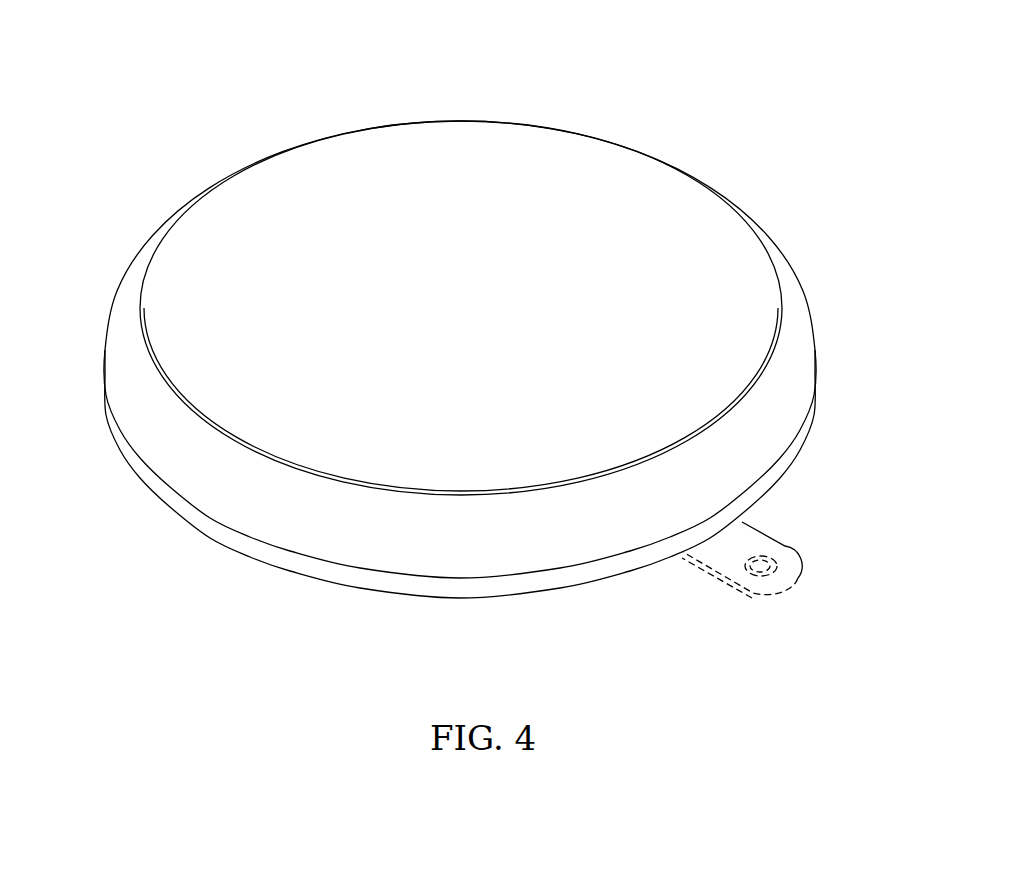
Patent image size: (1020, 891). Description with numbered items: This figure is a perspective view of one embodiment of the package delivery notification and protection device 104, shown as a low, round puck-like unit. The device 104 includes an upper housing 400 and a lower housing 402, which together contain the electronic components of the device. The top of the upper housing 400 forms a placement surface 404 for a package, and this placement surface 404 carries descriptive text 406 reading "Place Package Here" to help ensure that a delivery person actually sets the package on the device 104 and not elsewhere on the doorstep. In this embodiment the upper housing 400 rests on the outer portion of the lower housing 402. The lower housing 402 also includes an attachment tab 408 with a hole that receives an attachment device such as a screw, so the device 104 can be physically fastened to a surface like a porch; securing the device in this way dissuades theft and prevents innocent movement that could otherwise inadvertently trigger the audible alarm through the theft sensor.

The package delivery notification and protection device 104 is at (202, 82).
The upper housing 400 is at (125, 344).
The lower housing 402 is at (163, 493).
The placement surface 404 is at (636, 195).
The descriptive text 406 is at (447, 180).
The attachment tab 408 is at (782, 545).